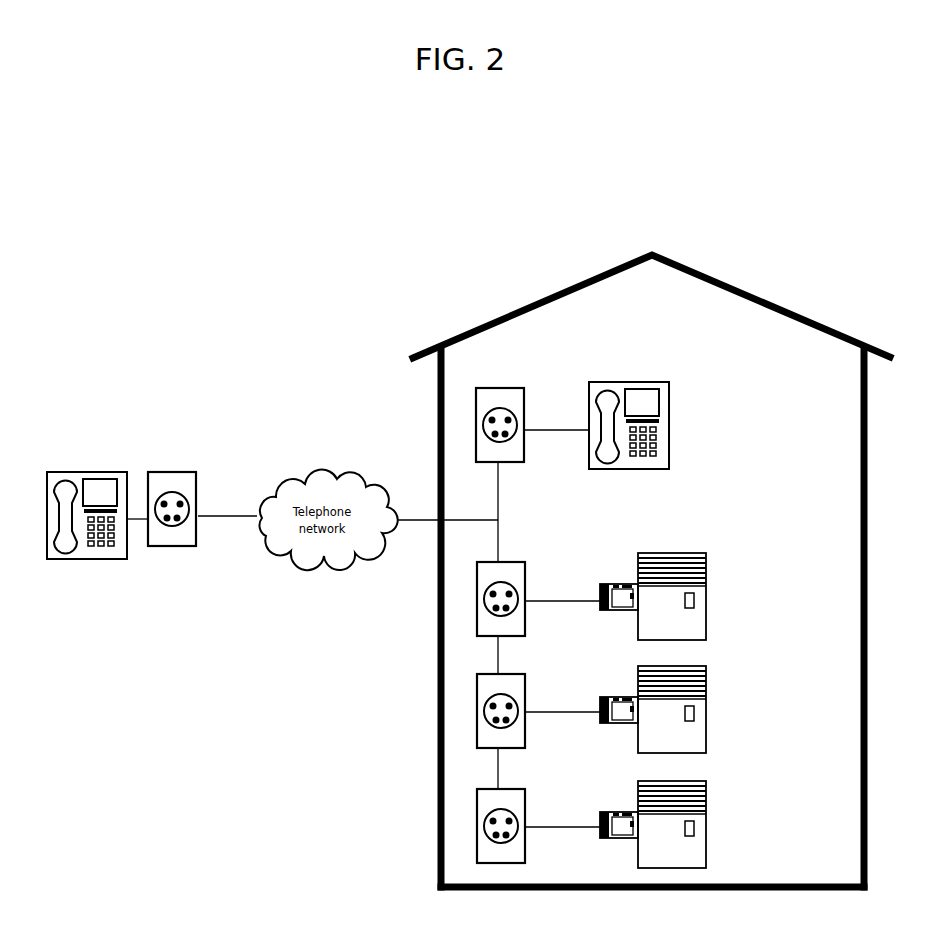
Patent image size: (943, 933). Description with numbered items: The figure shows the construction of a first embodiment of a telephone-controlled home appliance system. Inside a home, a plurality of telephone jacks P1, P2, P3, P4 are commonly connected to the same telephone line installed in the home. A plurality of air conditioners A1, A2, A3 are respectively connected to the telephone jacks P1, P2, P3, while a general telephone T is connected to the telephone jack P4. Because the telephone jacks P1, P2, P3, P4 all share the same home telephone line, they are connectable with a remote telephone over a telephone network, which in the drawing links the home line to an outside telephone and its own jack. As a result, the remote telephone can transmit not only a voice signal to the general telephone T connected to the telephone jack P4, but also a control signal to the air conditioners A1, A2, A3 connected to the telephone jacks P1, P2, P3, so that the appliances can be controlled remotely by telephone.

The telephone jack P1 is at (512, 606).
The telephone jack P2 is at (512, 716).
The telephone jack P3 is at (512, 831).
The telephone jack P4 is at (511, 429).
The general telephone T is at (678, 429).
The air conditioner A1 is at (707, 601).
The air conditioner A2 is at (707, 715).
The air conditioner A3 is at (707, 830).